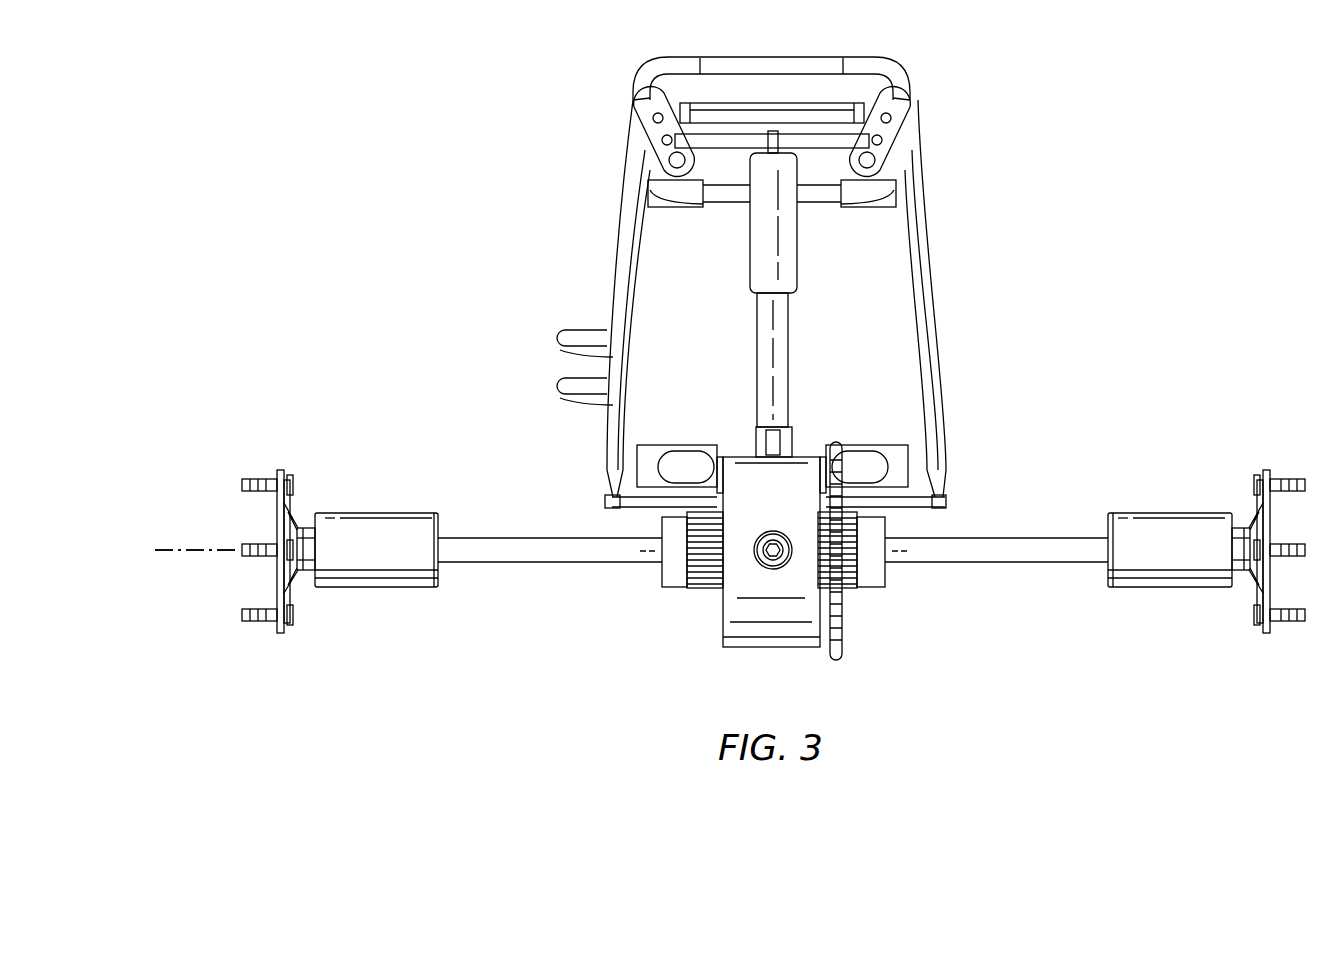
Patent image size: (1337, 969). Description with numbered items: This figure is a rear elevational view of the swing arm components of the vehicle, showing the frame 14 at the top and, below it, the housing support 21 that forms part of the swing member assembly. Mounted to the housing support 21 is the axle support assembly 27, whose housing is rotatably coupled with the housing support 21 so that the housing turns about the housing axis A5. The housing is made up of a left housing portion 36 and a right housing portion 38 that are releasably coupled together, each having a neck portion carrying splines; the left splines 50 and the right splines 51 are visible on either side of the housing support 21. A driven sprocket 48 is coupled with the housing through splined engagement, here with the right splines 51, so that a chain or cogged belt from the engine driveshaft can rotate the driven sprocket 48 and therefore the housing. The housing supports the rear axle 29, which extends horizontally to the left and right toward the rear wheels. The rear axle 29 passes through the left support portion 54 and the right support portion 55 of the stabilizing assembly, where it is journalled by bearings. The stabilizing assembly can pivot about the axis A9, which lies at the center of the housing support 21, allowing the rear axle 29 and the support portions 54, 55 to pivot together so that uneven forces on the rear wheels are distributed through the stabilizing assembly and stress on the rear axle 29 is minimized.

The frame 14 is at (615, 238).
The housing support 21 is at (775, 650).
The axle support assembly 27 is at (702, 626).
The rear axle 29 is at (500, 564).
The left housing portion 36 is at (644, 573).
The right housing portion 38 is at (905, 574).
The driven sprocket 48 is at (843, 637).
The left splines 50 is at (690, 590).
The right splines 51 is at (856, 592).
The left support portion 54 is at (378, 588).
The right support portion 55 is at (1170, 588).
The housing axis A5 is at (158, 549).
The pivot axis of stabilizing assembly A9 is at (772, 548).